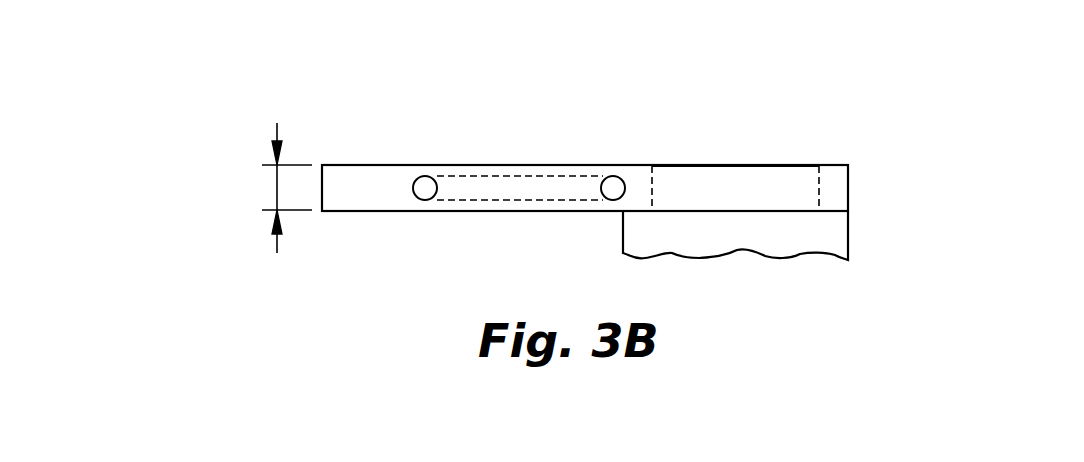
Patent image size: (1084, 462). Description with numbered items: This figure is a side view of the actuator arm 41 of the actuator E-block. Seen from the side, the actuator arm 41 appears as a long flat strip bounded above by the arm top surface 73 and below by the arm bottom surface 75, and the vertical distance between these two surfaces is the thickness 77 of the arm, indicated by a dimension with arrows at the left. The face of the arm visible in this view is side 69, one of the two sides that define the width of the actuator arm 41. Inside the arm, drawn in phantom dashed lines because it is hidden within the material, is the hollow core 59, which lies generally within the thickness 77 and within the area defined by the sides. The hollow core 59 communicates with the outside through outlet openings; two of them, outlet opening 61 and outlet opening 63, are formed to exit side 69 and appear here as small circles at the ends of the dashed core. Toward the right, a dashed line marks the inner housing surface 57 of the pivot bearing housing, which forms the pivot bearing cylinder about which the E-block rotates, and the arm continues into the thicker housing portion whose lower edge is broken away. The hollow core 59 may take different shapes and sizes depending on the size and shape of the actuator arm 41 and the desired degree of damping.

The actuator arm 41 is at (470, 165).
The inner housing surface 57 is at (653, 180).
The hollow core 59 is at (477, 188).
The outlet opening 61 is at (610, 183).
The outlet opening 63 is at (423, 200).
The side 69 is at (743, 177).
The arm top surface 73 is at (553, 165).
The arm bottom surface 75 is at (560, 212).
The thickness 77 is at (275, 190).